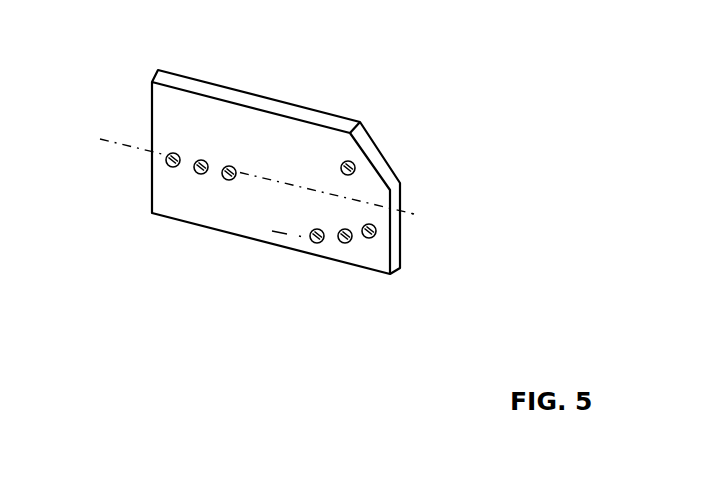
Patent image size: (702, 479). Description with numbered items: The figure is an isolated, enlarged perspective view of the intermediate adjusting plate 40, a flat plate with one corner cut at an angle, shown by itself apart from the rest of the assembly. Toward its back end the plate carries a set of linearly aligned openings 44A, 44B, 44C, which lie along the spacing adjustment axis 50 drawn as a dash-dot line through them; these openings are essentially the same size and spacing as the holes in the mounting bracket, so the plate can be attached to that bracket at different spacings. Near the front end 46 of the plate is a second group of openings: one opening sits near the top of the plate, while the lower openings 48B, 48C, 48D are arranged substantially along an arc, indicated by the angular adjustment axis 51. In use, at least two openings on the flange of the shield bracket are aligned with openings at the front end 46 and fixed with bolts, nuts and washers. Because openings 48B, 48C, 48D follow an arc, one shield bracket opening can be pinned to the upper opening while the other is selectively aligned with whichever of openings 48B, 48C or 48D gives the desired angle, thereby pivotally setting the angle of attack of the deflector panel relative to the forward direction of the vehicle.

The intermediate adjusting plate 40 is at (241, 128).
The linearly aligned opening 44A is at (172, 168).
The linearly aligned opening 44B is at (200, 174).
The linearly aligned opening 44C is at (228, 180).
The front end 46 is at (387, 238).
The arc-aligned opening 48B is at (315, 243).
The arc-aligned opening 48C is at (345, 243).
The arc-aligned opening 48D is at (370, 238).
The spacing adjustment axis 50 is at (104, 141).
The angular adjustment axis 51 is at (428, 205).